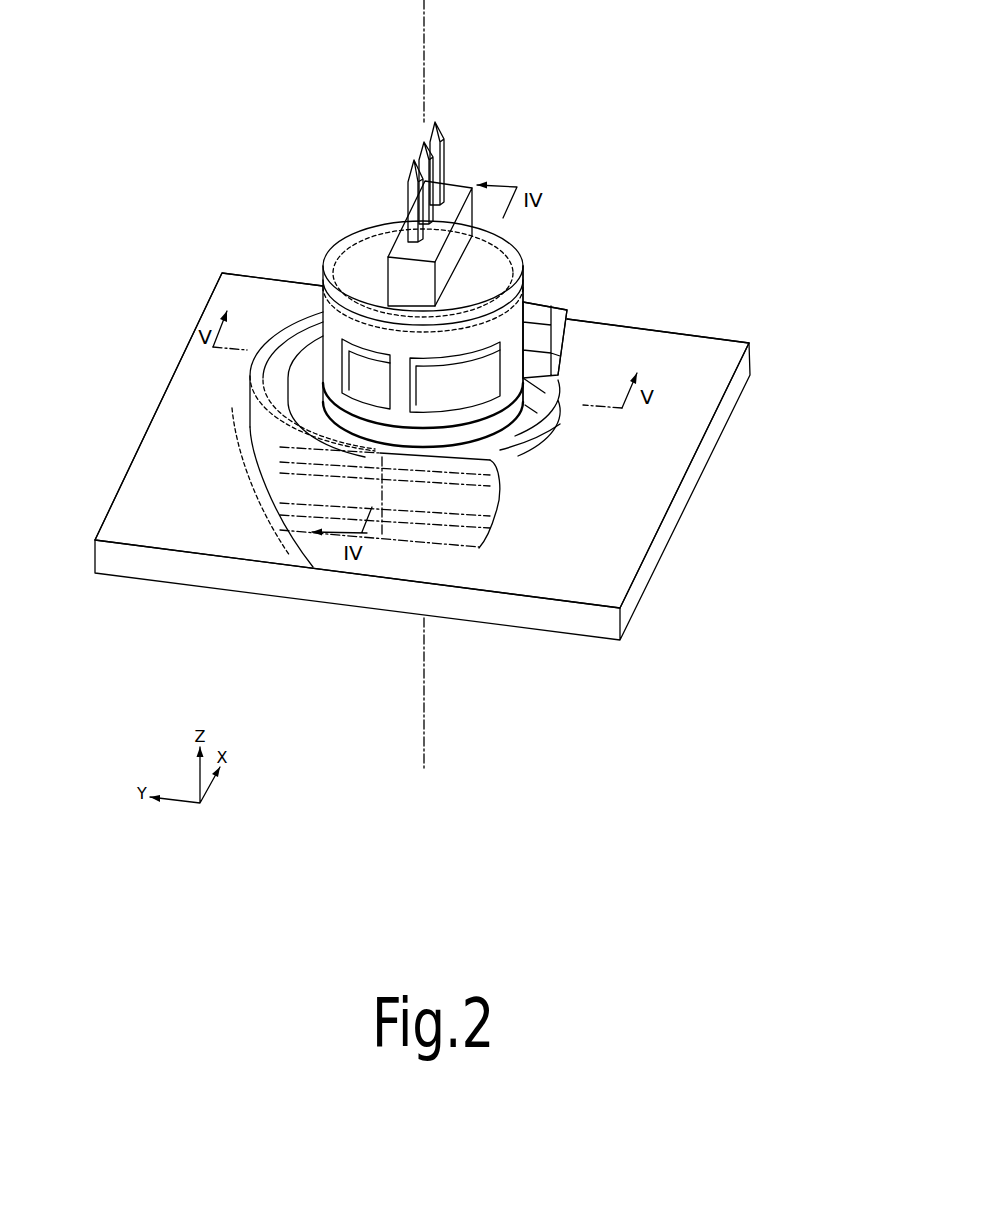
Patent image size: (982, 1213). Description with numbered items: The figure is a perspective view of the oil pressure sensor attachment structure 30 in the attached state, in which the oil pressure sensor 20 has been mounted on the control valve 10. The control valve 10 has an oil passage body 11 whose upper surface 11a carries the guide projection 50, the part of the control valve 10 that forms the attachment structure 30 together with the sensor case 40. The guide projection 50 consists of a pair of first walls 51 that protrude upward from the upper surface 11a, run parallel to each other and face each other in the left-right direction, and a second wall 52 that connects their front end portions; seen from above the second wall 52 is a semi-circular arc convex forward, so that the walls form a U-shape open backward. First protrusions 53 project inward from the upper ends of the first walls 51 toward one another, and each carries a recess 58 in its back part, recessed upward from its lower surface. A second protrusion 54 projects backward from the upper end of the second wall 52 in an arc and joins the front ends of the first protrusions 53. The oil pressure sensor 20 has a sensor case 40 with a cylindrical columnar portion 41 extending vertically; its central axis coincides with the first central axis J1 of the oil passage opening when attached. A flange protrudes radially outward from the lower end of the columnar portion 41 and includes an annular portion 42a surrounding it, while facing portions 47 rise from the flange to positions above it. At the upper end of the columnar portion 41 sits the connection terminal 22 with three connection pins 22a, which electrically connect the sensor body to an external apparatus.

The control valve 10 is at (422, 444).
The oil passage body 11 is at (623, 573).
The upper surface 11a is at (170, 522).
The oil pressure sensor 20 is at (355, 222).
The connection terminal 22 is at (467, 173).
The connection pins 22a is at (420, 175).
The oil pressure sensor attachment structure 30 is at (478, 185).
The sensor case 40 is at (320, 260).
The columnar portion 41 is at (517, 303).
The annular portion 42a is at (530, 449).
The facing portion 47 is at (537, 413).
The guide projection 50 is at (328, 462).
The first walls 51 is at (517, 540).
The second wall 52 is at (278, 378).
The first protrusions 53 is at (505, 452).
The second protrusion 54 is at (312, 383).
The recess 58 is at (545, 394).
The first central axis J1 is at (425, 22).